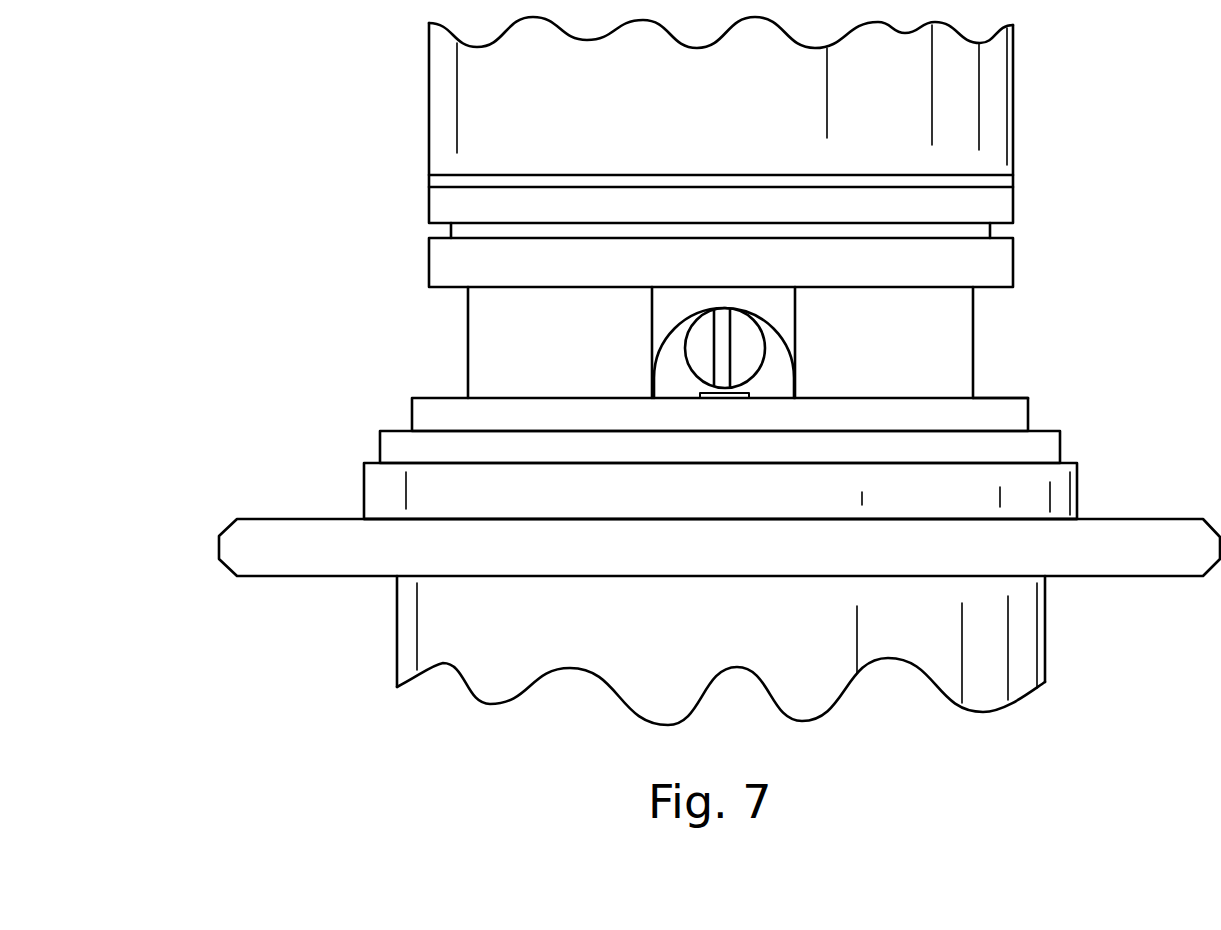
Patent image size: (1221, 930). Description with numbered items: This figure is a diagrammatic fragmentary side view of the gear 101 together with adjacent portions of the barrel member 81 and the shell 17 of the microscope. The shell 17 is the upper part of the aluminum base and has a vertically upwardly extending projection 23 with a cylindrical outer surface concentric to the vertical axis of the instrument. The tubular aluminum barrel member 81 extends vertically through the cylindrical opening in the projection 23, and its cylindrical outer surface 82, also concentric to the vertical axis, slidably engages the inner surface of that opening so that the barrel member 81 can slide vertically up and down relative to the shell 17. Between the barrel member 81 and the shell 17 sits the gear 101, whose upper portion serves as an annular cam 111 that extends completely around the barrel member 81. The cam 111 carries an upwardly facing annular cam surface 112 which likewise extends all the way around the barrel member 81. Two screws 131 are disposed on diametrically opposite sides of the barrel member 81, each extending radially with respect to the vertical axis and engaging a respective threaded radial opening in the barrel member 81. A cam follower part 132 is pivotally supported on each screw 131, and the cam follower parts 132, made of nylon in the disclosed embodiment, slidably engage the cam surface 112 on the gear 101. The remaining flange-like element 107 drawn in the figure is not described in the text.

The barrel member 81 is at (429, 263).
The cylindrical outer surface 82 is at (468, 340).
The screw 131 is at (695, 352).
The cam follower part 132 is at (784, 372).
The annular cam 111 is at (1020, 414).
The cam surface 112 is at (1007, 397).
The flange 107 is at (218, 545).
The gear 101 is at (754, 562).
The shell 17 is at (750, 630).
The projection 23 is at (397, 625).